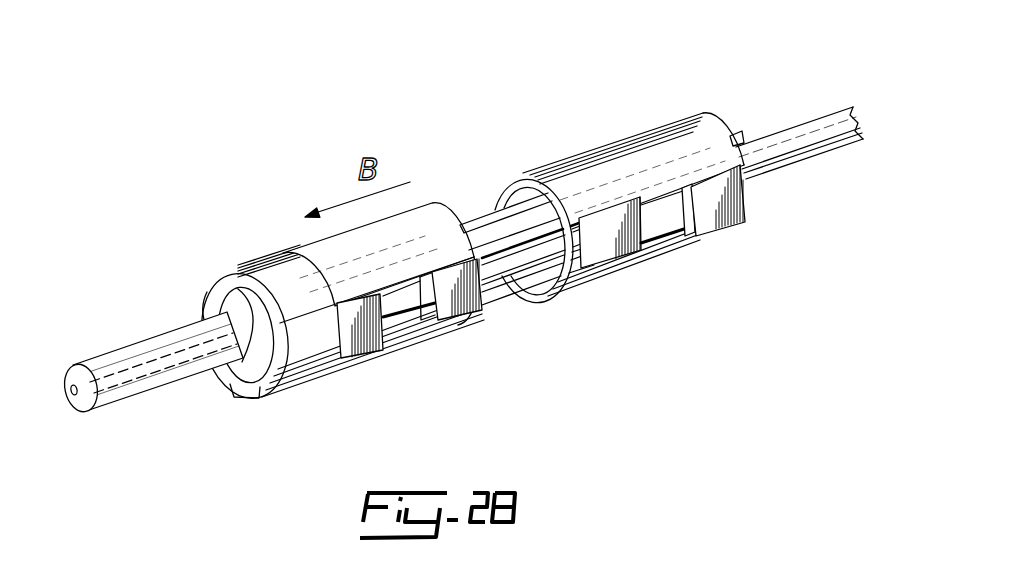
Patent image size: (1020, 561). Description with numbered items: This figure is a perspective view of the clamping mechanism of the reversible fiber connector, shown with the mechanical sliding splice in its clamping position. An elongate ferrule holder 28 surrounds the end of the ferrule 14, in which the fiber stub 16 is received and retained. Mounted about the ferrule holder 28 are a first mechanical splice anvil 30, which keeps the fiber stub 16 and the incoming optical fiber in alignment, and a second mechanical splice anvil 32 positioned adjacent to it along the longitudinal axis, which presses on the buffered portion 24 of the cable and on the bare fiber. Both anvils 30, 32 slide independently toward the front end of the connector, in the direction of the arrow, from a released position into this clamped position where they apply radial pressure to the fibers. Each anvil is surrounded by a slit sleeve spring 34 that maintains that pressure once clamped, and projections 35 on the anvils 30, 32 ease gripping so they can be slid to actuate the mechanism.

The ferrule 14 is at (183, 338).
The fiber stub 16 is at (150, 397).
The buffered portion 24 is at (800, 136).
The ferrule holder 28 is at (255, 265).
The first mechanical splice anvil 30 is at (470, 312).
The second mechanical splice anvil 32 is at (726, 224).
The slit sleeve spring 34 is at (418, 208).
The projections 35 is at (704, 232).